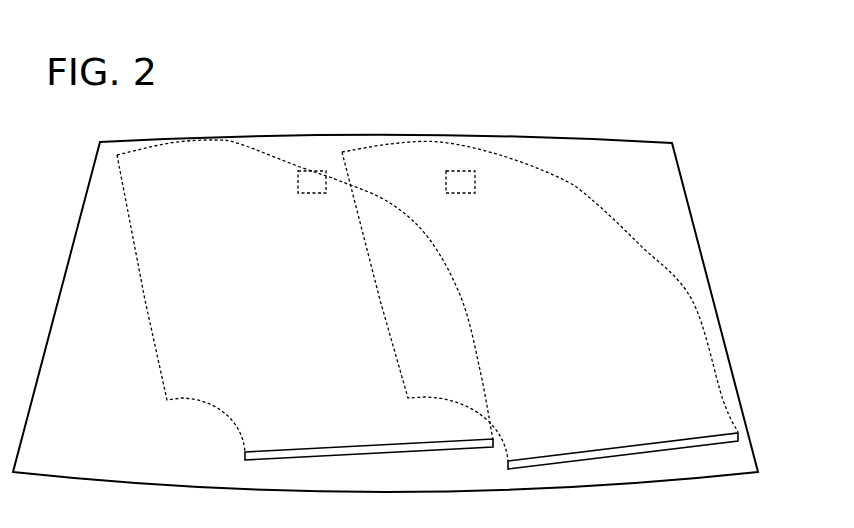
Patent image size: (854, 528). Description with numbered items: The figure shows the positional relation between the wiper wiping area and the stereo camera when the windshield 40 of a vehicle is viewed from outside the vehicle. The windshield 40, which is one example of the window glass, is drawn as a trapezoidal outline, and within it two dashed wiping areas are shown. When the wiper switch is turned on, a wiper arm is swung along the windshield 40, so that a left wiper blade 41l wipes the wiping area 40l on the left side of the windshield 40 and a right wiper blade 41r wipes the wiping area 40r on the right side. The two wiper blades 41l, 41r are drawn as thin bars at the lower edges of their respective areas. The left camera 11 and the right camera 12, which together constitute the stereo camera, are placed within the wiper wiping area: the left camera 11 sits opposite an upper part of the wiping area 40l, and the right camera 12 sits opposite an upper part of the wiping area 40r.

The windshield 40 is at (681, 170).
The wiping area 40r is at (165, 336).
The wiping area 40l is at (582, 206).
The right wiper blade 41r is at (355, 445).
The left wiper blade 41l is at (610, 445).
The left camera 11 is at (478, 185).
The right camera 12 is at (297, 185).